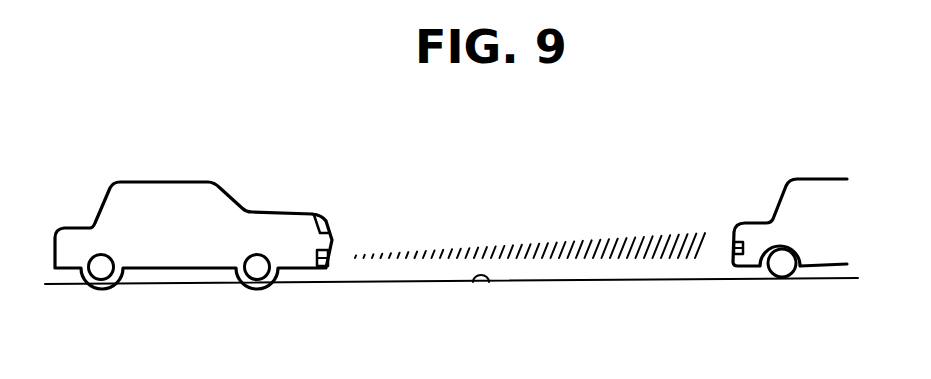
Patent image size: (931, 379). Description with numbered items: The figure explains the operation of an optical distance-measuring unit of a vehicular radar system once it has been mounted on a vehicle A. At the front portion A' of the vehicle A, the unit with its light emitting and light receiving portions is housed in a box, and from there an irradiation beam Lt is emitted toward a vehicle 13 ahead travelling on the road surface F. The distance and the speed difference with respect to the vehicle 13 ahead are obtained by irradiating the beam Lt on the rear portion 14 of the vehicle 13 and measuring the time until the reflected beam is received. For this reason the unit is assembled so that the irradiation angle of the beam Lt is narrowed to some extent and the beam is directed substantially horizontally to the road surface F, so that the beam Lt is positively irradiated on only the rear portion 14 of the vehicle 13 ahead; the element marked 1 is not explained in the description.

The vehicle A is at (193, 213).
The front portion A' is at (354, 199).
The reflector / detection device on preceding vehicle 1 is at (315, 268).
The irradiation beam Lt is at (582, 237).
The road surface F is at (488, 282).
The vehicle ahead 13 is at (810, 178).
The rear portion 14 is at (748, 265).